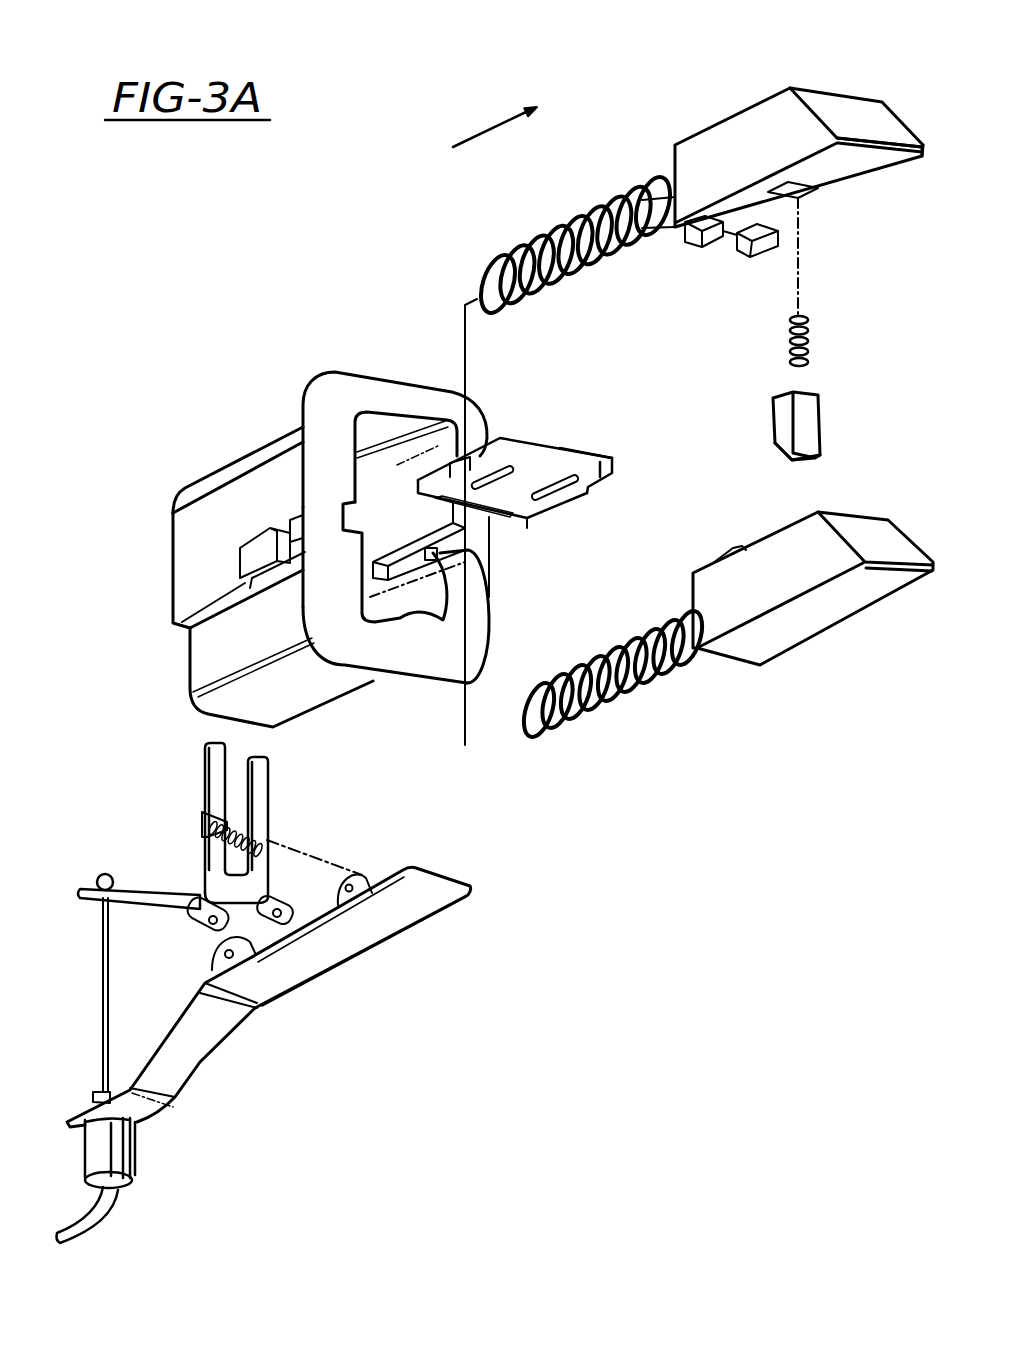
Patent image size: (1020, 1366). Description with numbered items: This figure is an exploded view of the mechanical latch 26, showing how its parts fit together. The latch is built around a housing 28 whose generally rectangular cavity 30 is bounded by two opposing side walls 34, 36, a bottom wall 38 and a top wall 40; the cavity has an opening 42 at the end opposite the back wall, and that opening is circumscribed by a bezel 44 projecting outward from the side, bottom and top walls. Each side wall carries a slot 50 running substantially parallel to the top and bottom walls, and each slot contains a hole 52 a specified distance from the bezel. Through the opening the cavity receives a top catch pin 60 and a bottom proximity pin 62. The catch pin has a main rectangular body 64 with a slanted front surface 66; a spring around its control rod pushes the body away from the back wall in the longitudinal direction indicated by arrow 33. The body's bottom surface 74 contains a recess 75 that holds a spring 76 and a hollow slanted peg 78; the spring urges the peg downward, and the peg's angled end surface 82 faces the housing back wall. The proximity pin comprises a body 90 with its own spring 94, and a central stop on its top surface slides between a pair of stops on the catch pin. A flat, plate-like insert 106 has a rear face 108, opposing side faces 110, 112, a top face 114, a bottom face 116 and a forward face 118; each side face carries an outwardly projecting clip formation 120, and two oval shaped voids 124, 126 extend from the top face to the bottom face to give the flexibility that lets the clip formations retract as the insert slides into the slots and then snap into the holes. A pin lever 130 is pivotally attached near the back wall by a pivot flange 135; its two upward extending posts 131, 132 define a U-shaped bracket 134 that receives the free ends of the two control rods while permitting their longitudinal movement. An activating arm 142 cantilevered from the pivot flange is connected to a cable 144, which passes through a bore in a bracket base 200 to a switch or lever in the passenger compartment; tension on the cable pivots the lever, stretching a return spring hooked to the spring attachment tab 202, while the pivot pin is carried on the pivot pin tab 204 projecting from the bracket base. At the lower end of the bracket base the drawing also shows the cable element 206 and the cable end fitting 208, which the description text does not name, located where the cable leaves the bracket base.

The mechanical latch 26 is at (245, 315).
The housing 28 is at (254, 560).
The cavity 30 is at (423, 548).
The arrow 33 is at (467, 133).
The side wall 34 is at (228, 545).
The side wall 36 is at (397, 485).
The bottom wall 38 is at (330, 683).
The top wall 40 is at (288, 443).
The opening 42 is at (410, 620).
The bezel 44 is at (365, 645).
The slot 50 is at (497, 540).
The hole 52 is at (437, 555).
The top catch pin 60 is at (799, 164).
The bottom proximity pin 62 is at (793, 638).
The main rectangular body 64 is at (748, 174).
The slanted front surface 66 is at (876, 132).
The bottom surface 74 is at (890, 165).
The recess 75 is at (818, 197).
The spring 76 is at (812, 348).
The slanted peg 78 is at (811, 449).
The angled end surface 82 is at (777, 450).
The body 90 is at (786, 587).
The spring 94 is at (607, 713).
The insert 106 is at (577, 467).
The rear face 108 is at (503, 517).
The side face 110 is at (485, 452).
The side face 112 is at (550, 492).
The top face 114 is at (605, 455).
The bottom face 116 is at (533, 490).
The forward face 118 is at (607, 467).
The clip formation 120 is at (448, 468).
The oval shaped void 124 is at (572, 458).
The oval shaped void 126 is at (515, 465).
The pin lever 130 is at (226, 837).
The post 131 is at (217, 777).
The post 132 is at (267, 813).
The U-shaped bracket 134 is at (238, 752).
The pivot flange 135 is at (197, 923).
The activating arm 142 is at (150, 893).
The cable 144 is at (105, 960).
The bracket base 200 is at (298, 974).
The spring attachment tab 202 is at (350, 883).
The pivot pin tab 204 is at (217, 963).
The cable 206 is at (156, 1170).
The cable housing 208 is at (137, 1132).